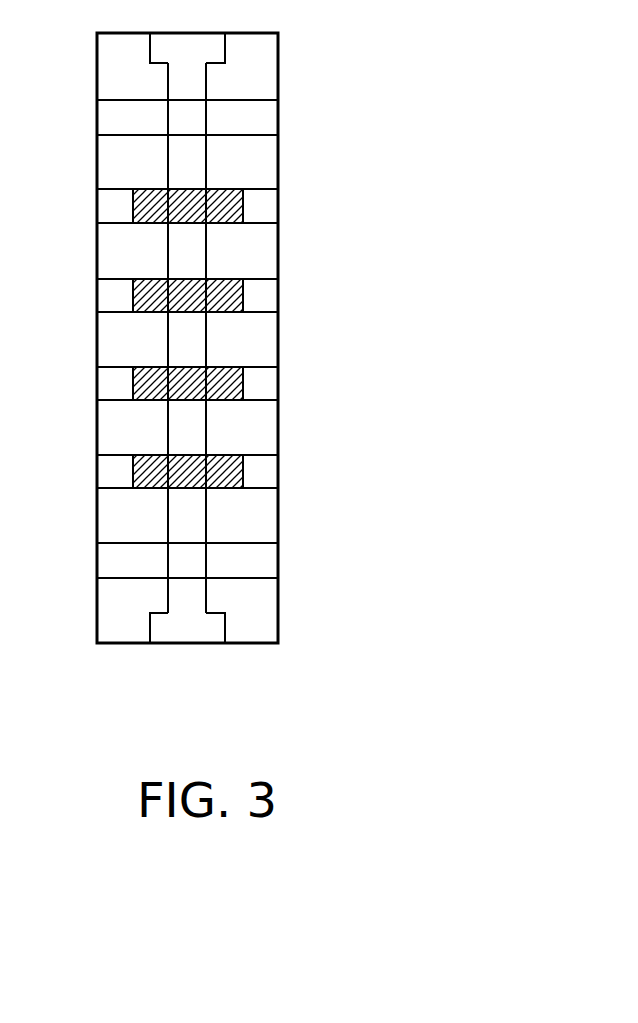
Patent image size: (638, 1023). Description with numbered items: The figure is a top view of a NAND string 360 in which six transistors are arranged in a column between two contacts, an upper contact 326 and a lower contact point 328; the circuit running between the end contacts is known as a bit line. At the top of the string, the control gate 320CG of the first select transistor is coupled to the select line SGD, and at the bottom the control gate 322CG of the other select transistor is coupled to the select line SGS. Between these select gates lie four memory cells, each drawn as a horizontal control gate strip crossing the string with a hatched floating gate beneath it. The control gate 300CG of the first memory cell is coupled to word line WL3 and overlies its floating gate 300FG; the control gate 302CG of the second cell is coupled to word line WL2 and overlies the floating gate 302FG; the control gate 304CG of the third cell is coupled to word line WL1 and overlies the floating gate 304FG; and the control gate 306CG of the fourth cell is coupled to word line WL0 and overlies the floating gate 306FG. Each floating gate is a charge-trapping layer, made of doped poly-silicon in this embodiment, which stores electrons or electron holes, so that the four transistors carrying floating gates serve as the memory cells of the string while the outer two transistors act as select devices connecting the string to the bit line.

The NAND string 360 is at (467, 683).
The upper contact / bit line contact 326 is at (225, 48).
The contact point 328 is at (225, 628).
The control gate 320CG is at (263, 100).
The control gate 322CG is at (263, 543).
The control gate 300CG is at (263, 189).
The floating gate 300FG is at (225, 188).
The control gate 302CG is at (263, 279).
The floating gate 302FG is at (225, 278).
The control gate 304CG is at (263, 367).
The floating gate 304FG is at (225, 366).
The control gate 306CG is at (263, 455).
The floating gate 306FG is at (225, 454).